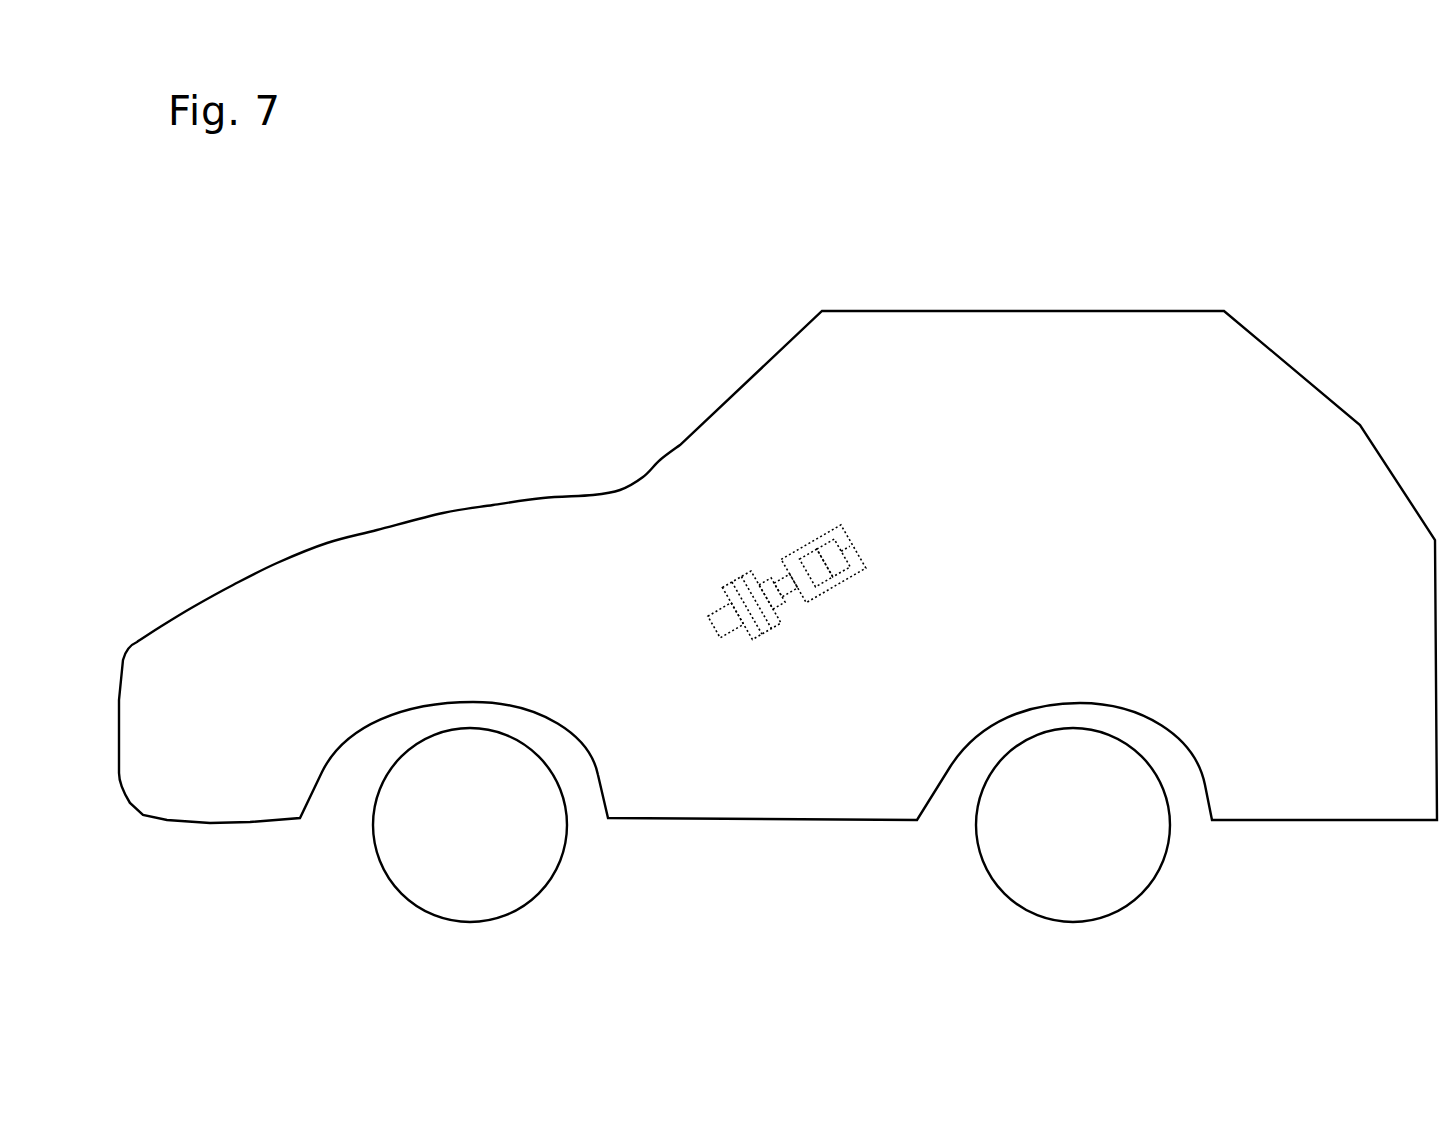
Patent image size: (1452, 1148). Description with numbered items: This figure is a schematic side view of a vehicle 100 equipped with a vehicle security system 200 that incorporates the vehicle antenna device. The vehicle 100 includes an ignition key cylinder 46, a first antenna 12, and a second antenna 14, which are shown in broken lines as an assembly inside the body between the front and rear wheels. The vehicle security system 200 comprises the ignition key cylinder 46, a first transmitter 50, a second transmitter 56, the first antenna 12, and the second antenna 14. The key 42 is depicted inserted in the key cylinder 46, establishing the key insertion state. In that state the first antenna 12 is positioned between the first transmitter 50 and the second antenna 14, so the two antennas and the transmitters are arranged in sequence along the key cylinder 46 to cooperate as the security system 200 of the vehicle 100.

The vehicle 100 is at (1033, 310).
The vehicle security system 200 is at (743, 500).
The first antenna 12 is at (777, 630).
The second antenna 14 is at (757, 640).
The key 42 is at (818, 537).
The ignition key cylinder 46 is at (713, 627).
The first transmitter 50 is at (835, 587).
The second transmitter 56 is at (840, 556).